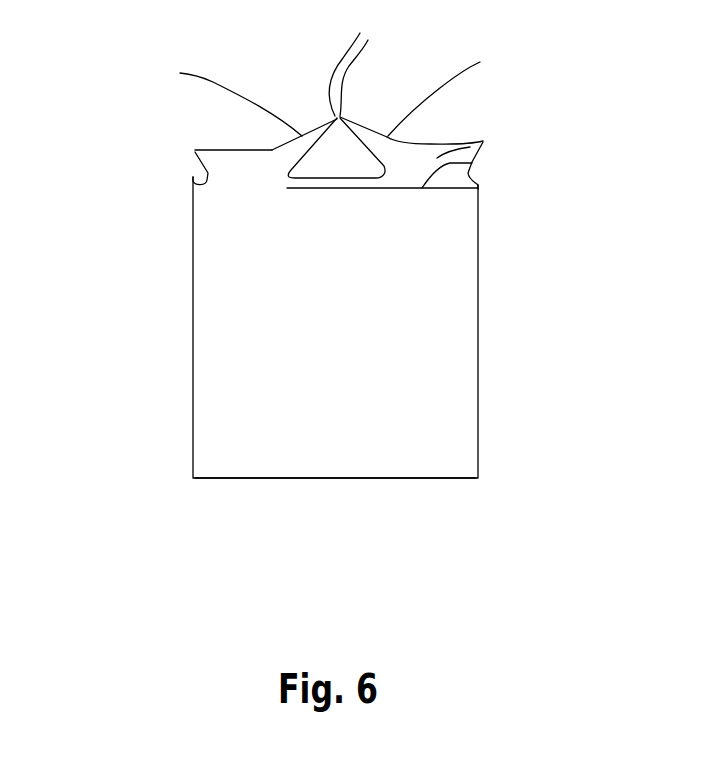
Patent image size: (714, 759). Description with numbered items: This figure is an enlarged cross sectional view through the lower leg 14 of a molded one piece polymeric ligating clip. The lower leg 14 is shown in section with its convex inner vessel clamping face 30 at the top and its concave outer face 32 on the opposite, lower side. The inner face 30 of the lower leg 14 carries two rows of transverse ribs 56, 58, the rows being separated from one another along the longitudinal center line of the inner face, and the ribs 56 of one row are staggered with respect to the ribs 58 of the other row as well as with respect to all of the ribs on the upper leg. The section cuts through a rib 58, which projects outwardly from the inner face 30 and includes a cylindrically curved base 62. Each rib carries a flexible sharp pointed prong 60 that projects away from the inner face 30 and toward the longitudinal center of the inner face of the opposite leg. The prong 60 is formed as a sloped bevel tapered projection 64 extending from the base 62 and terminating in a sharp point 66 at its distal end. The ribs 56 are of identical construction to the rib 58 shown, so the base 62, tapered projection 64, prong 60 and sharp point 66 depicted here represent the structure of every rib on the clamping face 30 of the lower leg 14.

The lower leg 14 is at (172, 300).
The concave outer face 32 is at (315, 479).
The transverse ribs 56 is at (225, 168).
The transverse ribs 58 is at (484, 143).
The convex inner vessel clamping face 30 is at (472, 163).
The cylindrically curved base 62 is at (240, 150).
The sloped bevel tapered projection 64 is at (331, 95).
The flexible sharp pointed prong 60 is at (292, 113).
The sharp point 66 is at (345, 74).